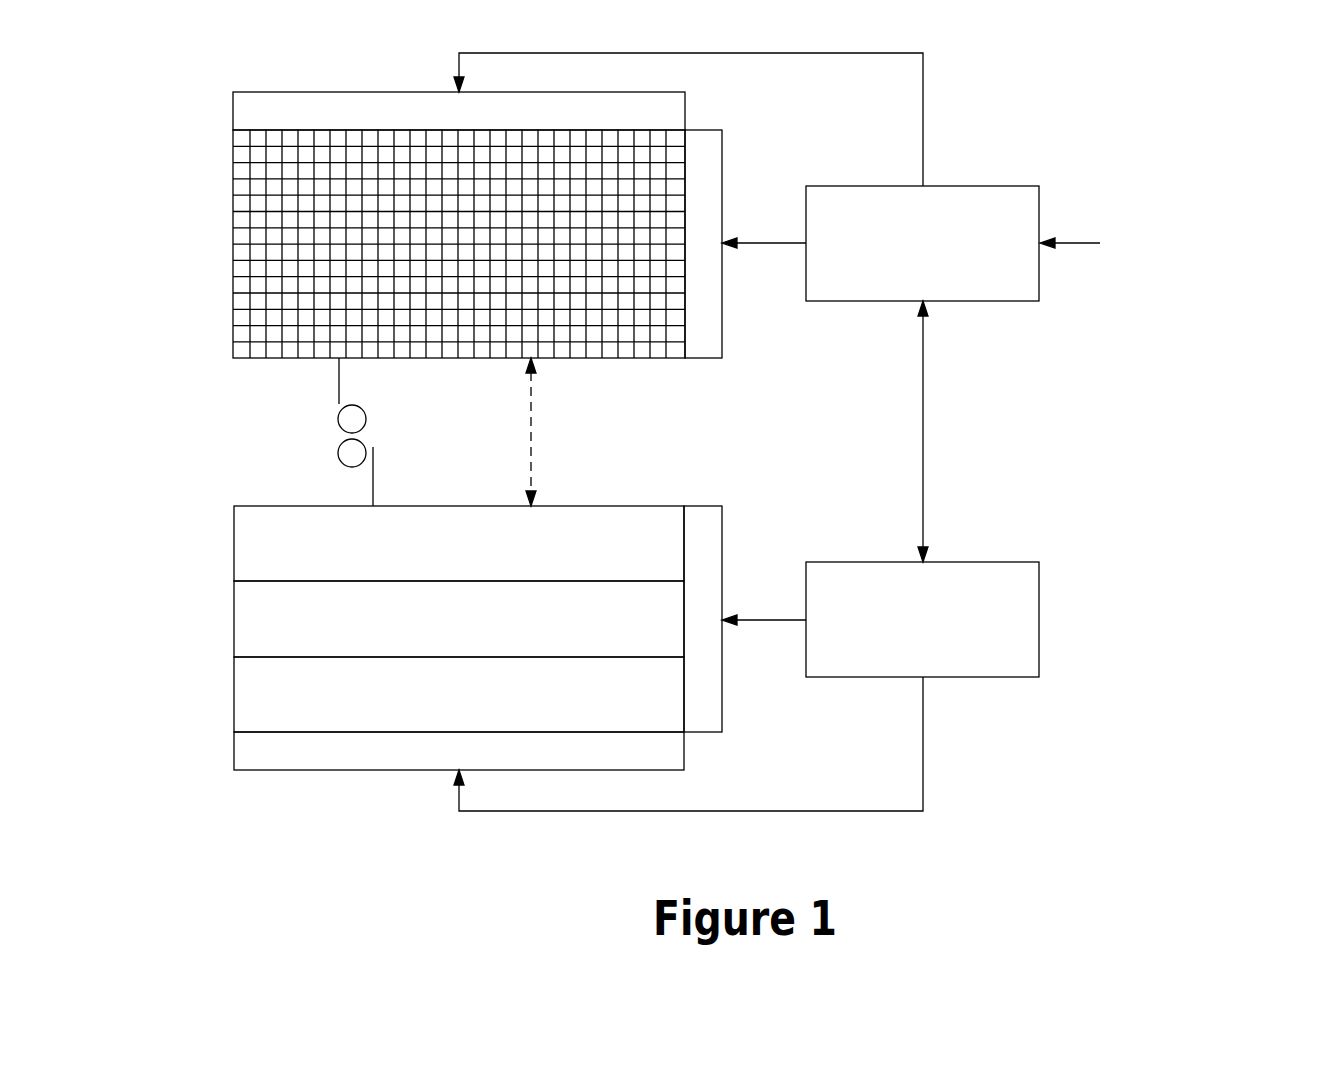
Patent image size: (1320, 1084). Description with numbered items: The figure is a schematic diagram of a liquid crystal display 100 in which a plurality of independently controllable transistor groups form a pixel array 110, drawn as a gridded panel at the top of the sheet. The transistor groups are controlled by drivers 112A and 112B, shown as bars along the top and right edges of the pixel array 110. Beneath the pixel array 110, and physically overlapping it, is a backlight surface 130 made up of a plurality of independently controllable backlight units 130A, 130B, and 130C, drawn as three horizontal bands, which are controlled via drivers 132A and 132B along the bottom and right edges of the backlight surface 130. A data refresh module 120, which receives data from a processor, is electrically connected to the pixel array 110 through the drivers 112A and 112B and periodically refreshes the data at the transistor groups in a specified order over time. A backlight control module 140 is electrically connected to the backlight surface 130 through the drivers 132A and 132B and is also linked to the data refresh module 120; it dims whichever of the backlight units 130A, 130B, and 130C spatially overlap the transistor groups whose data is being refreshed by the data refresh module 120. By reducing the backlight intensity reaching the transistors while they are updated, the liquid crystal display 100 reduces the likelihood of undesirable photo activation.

The liquid crystal display 100 is at (178, 456).
The pixel array 110 is at (206, 226).
The driver 112A is at (317, 92).
The driver 112B is at (722, 148).
The data refresh module 120 is at (875, 186).
The backlight surface 130 is at (199, 652).
The backlight unit 130A is at (234, 544).
The backlight unit 130B is at (234, 610).
The backlight unit 130C is at (234, 697).
The driver 132A is at (234, 750).
The driver 132B is at (722, 525).
The backlight control module 140 is at (875, 562).